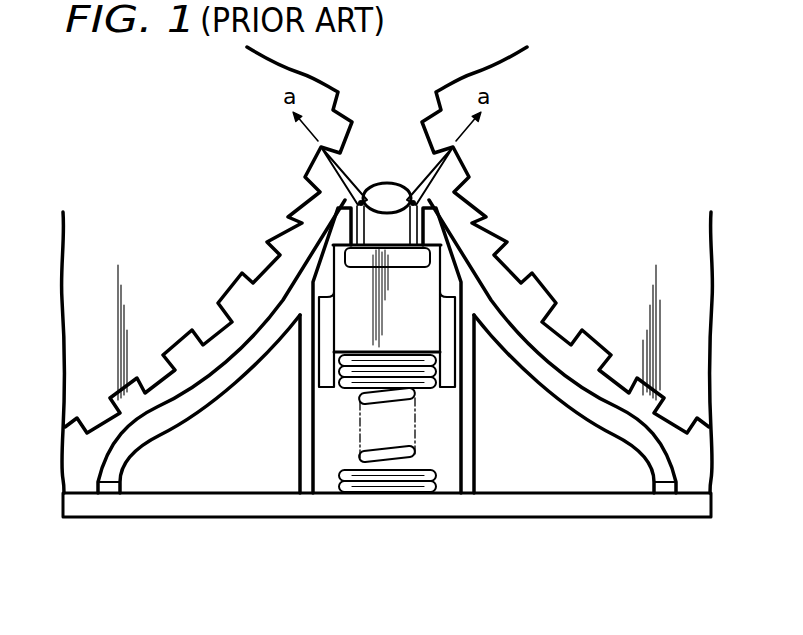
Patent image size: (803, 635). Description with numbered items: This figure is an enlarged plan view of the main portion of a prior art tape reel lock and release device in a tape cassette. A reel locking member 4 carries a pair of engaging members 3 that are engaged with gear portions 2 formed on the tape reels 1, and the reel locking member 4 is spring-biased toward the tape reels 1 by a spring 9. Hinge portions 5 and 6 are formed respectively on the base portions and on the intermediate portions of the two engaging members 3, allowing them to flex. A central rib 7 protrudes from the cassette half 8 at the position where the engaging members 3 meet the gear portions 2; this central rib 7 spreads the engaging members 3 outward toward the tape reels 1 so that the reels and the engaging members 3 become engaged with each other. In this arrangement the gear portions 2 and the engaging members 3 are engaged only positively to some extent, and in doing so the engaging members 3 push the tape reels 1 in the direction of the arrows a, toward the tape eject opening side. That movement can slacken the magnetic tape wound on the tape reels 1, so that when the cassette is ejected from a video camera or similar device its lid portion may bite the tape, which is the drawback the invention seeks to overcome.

The tape reel 1 is at (77, 266).
The gear portions 2 is at (102, 415).
The engaging members 3 is at (316, 162).
The reel locking member 4 is at (330, 338).
The hinge portion 5 is at (358, 248).
The hinge portion 6 is at (337, 198).
The central rib 7 is at (387, 184).
The cassette half 8 is at (572, 508).
The spring 9 is at (416, 436).